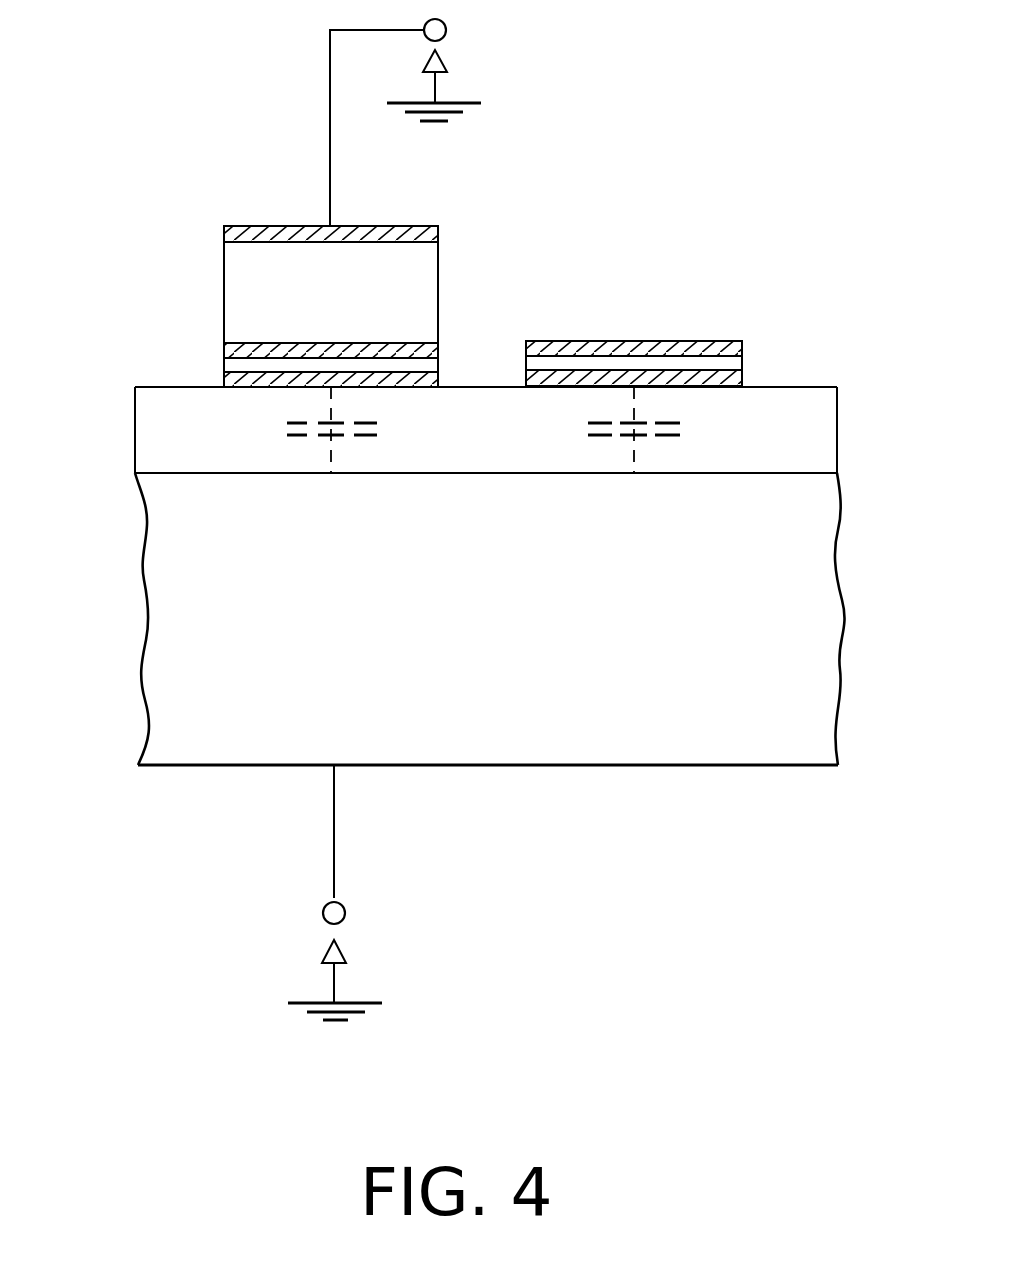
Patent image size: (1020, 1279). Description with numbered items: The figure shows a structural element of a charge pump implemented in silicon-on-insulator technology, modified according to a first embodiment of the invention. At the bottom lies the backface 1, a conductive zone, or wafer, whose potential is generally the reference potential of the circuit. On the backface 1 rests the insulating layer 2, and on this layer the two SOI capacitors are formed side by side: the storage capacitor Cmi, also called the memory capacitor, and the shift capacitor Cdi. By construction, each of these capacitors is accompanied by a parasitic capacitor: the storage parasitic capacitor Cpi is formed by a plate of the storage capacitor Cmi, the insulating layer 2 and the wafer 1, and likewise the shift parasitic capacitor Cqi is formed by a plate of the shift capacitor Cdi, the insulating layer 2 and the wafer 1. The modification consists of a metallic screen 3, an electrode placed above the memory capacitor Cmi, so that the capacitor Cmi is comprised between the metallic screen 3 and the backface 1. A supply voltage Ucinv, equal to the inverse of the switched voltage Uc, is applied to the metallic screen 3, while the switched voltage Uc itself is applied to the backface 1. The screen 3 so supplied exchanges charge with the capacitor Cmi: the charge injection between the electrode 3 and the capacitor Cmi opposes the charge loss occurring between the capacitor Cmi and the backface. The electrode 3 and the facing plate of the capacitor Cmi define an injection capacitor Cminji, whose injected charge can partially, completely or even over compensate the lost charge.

The backface 1 is at (167, 642).
The insulating layer 2 is at (183, 396).
The metallic screen 3 is at (394, 226).
The injection capacitor Cminji is at (223, 262).
The storage capacitor Cmi is at (440, 360).
The shift capacitor Cdi is at (742, 358).
The storage parasitic capacitor Cpi is at (290, 426).
The shift parasitic capacitor Cqi is at (680, 426).
The supply voltage Ucinv is at (437, 122).
The switched voltage Uc is at (346, 892).